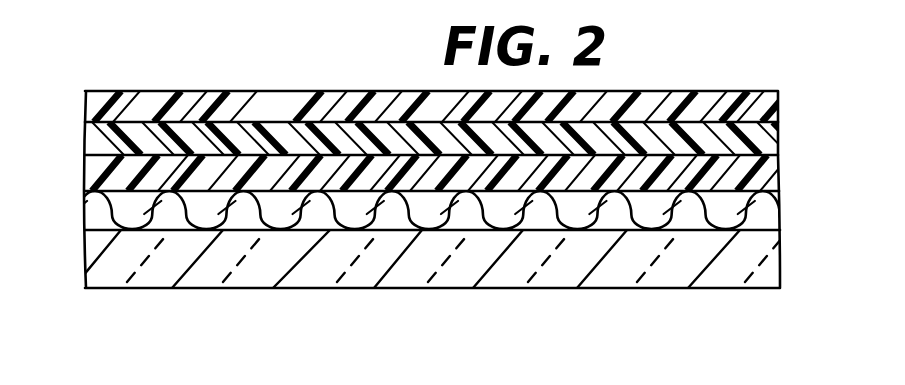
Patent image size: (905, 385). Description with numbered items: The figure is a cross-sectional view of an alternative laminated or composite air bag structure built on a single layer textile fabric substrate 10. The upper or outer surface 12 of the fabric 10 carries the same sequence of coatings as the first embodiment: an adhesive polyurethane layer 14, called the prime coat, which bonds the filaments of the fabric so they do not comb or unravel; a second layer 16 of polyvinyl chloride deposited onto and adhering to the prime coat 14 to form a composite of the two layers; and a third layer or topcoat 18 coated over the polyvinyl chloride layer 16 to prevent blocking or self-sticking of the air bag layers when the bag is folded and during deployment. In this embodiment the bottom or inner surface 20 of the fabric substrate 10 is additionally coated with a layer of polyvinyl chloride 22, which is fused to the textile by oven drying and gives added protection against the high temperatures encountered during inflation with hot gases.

The textile fabric substrate 10 is at (772, 212).
The upper or top surface 12 is at (96, 216).
The adhesive polyurethane layer 14 is at (85, 165).
The second layer of polyvinyl chloride 16 is at (777, 140).
The third layer or topcoat 18 is at (96, 100).
The bottom or inner surface 20 is at (750, 230).
The additional layer of polyvinyl chloride 22 is at (146, 268).